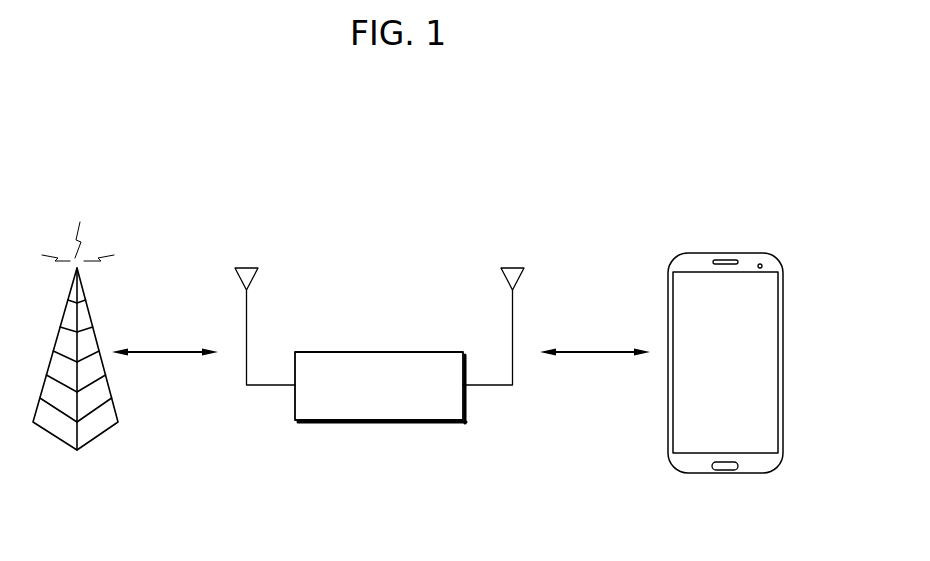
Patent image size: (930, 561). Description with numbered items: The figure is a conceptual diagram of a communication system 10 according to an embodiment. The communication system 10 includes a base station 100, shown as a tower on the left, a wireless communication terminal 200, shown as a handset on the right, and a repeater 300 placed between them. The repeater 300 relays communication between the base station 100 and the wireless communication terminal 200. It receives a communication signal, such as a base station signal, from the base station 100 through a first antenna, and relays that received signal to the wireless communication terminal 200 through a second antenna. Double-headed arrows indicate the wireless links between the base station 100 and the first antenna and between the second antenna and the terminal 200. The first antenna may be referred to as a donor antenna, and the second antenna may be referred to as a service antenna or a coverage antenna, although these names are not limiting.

The communication system 10 is at (663, 178).
The base station 100 is at (90, 313).
The wireless communication terminal 200 is at (743, 253).
The repeater 300 is at (393, 352).